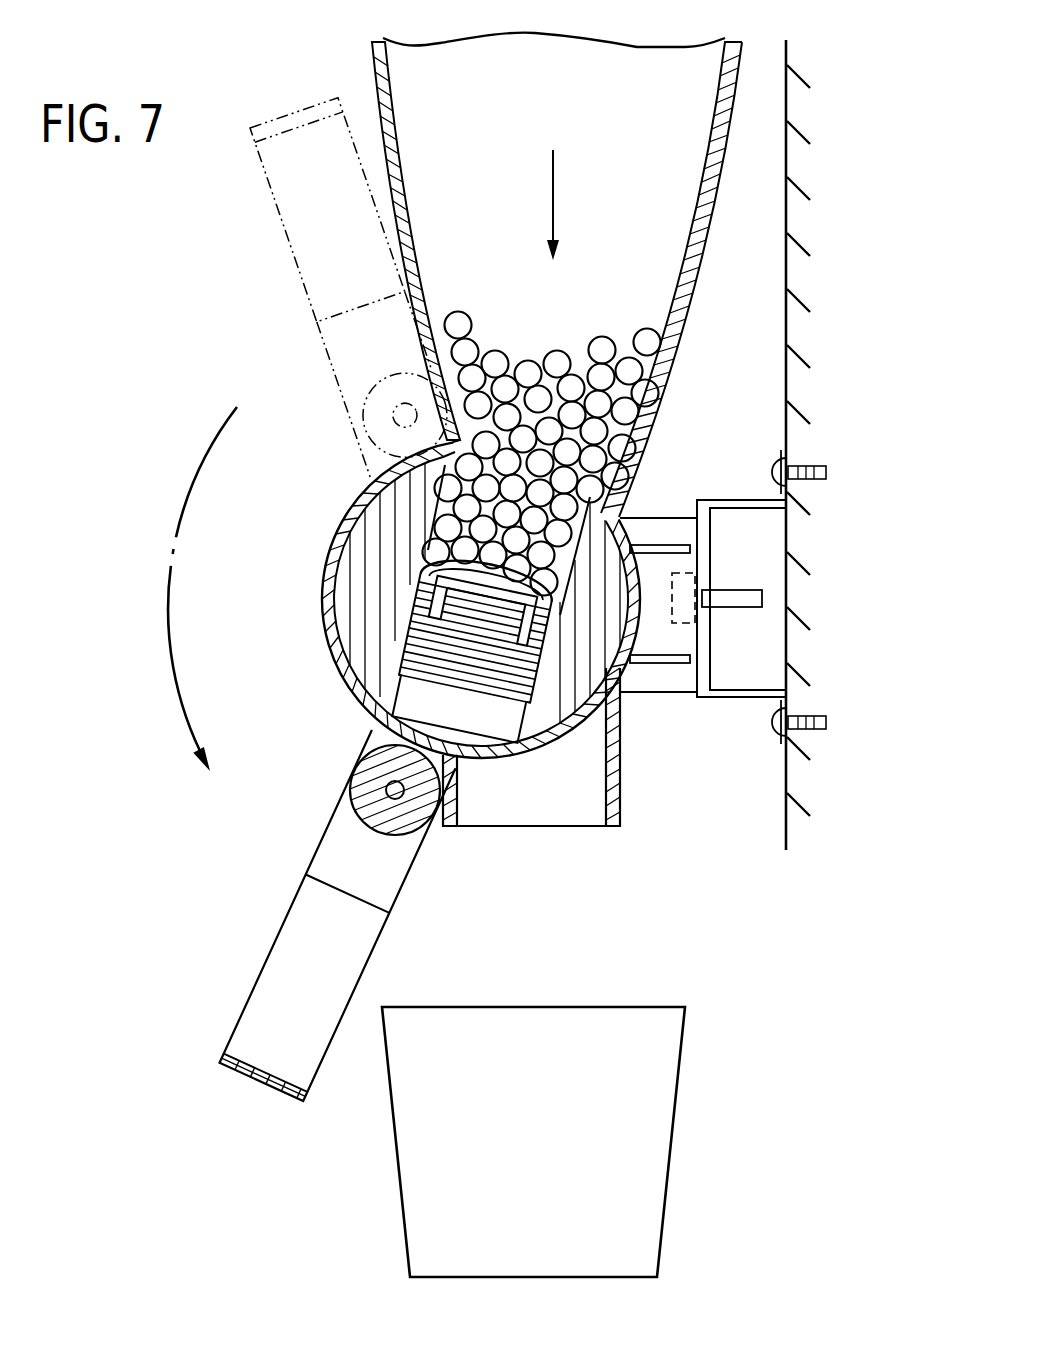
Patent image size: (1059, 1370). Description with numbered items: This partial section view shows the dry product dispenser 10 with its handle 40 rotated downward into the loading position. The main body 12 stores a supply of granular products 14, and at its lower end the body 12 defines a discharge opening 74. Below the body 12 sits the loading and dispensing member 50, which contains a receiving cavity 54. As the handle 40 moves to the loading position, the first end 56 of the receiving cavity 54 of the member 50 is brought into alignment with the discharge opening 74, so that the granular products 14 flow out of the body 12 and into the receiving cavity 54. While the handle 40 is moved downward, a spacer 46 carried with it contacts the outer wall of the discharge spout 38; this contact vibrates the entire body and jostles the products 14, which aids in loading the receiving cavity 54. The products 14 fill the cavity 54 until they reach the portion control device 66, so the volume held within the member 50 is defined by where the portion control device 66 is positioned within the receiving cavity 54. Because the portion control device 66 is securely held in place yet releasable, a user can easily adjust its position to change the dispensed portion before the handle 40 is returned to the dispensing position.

The dry product dispenser 10 is at (262, 300).
The main body 12 is at (373, 68).
The granular products 14 is at (457, 315).
The discharge spout 38 is at (523, 810).
The handle 40 is at (280, 975).
The spacer 46 is at (370, 768).
The loading and dispensing member 50 is at (357, 591).
The receiving cavity 54 is at (447, 511).
The first end 56 is at (537, 462).
The portion control device 66 is at (430, 560).
The discharge opening 74 is at (633, 468).